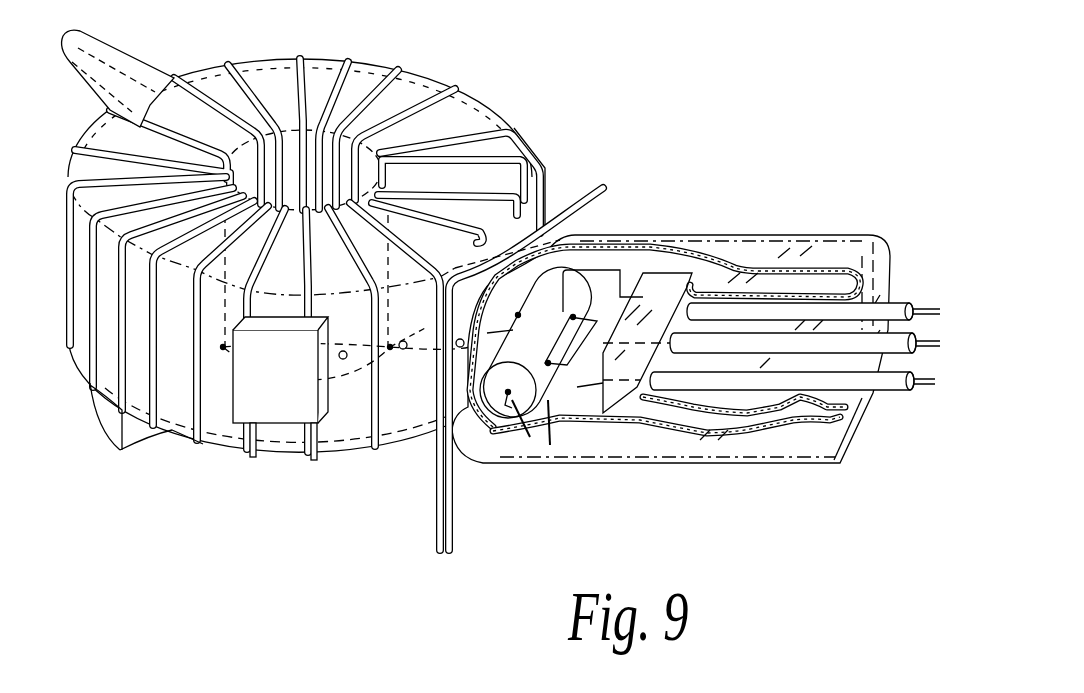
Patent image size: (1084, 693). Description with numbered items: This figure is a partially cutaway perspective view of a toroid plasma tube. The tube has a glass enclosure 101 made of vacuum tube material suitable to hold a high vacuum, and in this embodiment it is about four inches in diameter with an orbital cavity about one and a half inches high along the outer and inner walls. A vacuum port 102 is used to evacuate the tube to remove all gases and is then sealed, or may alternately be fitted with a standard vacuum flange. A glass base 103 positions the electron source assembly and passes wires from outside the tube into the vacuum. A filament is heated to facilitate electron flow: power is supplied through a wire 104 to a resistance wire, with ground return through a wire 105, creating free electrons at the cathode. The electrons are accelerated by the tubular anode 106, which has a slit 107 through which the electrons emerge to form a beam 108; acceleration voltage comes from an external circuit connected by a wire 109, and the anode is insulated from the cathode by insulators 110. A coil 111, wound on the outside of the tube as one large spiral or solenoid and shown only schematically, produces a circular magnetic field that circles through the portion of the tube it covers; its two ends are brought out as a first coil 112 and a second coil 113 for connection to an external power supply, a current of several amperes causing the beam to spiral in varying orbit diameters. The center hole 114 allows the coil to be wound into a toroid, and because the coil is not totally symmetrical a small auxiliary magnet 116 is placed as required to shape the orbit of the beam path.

The glass enclosure 101 is at (797, 233).
The vacuum port 102 is at (130, 62).
The glass base 103 is at (662, 290).
The wire 104 is at (609, 262).
The wire 105 is at (550, 445).
The anode 106 is at (560, 352).
The slit 107 is at (470, 417).
The beam 108 is at (480, 357).
The wire 109 is at (920, 305).
The insulators 110 is at (530, 437).
The coil 111 is at (146, 433).
The first coil 112 is at (437, 491).
The second coil 113 is at (581, 194).
The center hole 114 is at (313, 153).
The auxiliary magnet 116 is at (528, 143).